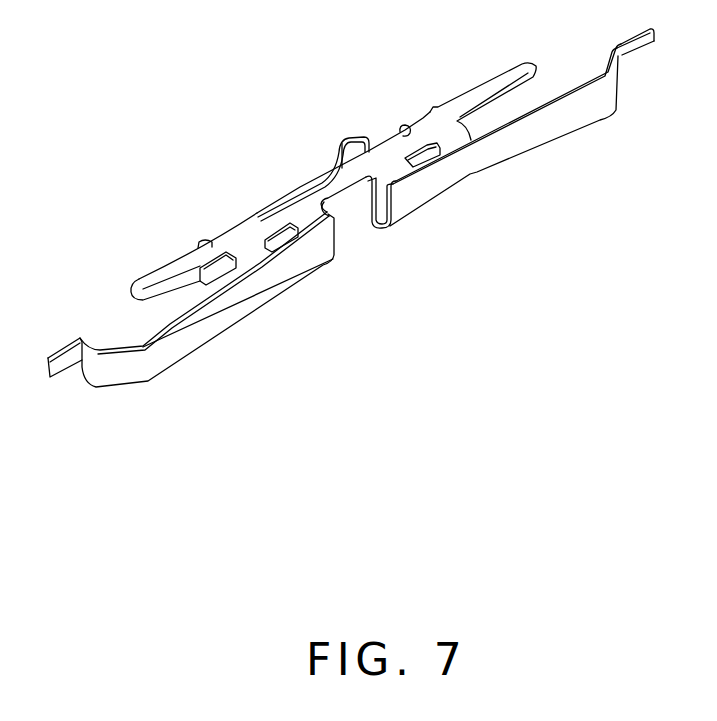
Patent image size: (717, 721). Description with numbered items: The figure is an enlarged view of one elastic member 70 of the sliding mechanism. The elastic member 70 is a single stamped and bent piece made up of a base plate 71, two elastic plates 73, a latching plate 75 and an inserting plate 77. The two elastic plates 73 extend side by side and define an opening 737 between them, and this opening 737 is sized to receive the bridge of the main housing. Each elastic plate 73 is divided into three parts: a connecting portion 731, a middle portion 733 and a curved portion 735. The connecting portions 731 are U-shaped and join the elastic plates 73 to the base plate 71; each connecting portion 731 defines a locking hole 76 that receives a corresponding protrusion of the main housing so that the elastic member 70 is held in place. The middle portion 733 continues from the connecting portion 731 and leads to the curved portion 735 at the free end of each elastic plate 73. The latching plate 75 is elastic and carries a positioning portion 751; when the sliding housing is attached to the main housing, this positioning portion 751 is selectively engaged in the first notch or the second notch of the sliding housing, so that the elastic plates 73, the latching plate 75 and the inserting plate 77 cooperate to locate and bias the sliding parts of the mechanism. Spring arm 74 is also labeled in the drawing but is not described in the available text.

The elastic member 70 is at (476, 66).
The base plate 71 is at (400, 128).
The elastic plate 73 is at (712, 141).
The connecting portion 731 is at (410, 190).
The middle portion 733 is at (590, 100).
The curved portion 735 is at (636, 50).
The opening 737 is at (355, 217).
The spring arm 74 is at (147, 312).
The latching plate 75 is at (338, 158).
The positioning portion 751 is at (340, 139).
The locking hole 76 is at (425, 157).
The inserting plate 77 is at (386, 155).